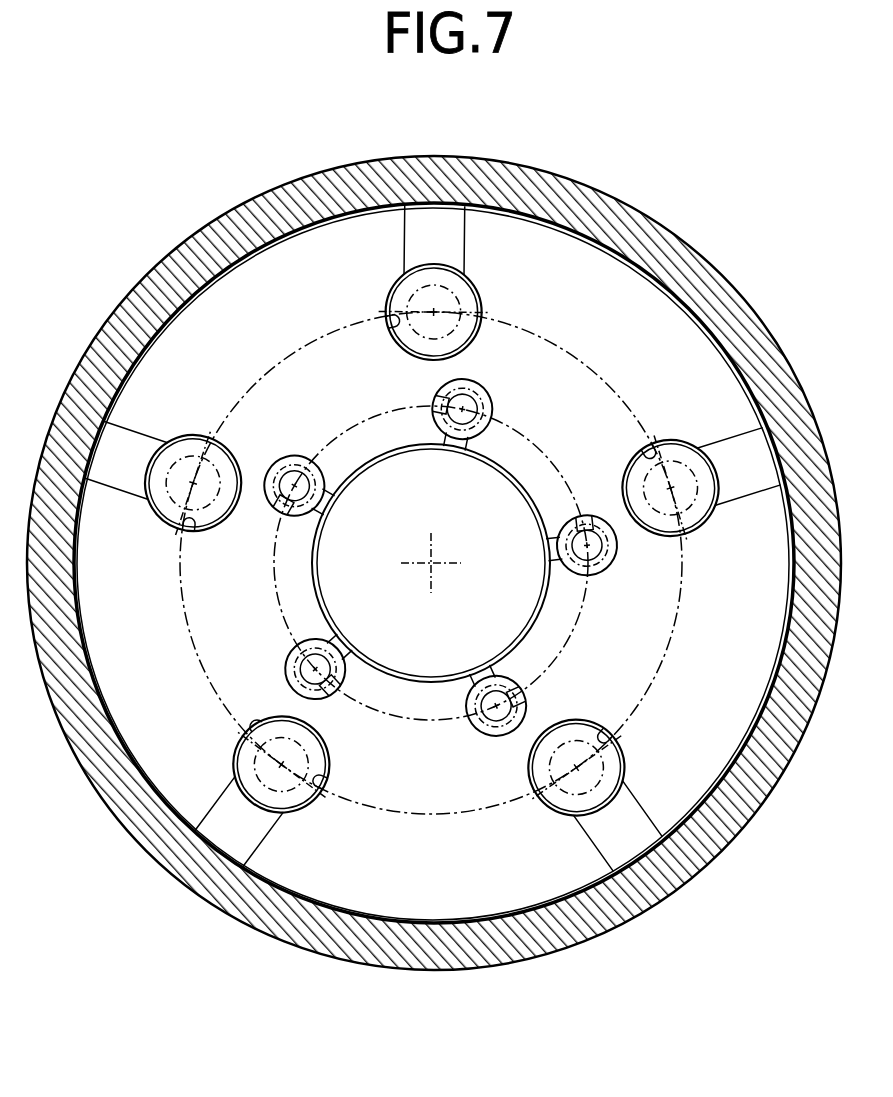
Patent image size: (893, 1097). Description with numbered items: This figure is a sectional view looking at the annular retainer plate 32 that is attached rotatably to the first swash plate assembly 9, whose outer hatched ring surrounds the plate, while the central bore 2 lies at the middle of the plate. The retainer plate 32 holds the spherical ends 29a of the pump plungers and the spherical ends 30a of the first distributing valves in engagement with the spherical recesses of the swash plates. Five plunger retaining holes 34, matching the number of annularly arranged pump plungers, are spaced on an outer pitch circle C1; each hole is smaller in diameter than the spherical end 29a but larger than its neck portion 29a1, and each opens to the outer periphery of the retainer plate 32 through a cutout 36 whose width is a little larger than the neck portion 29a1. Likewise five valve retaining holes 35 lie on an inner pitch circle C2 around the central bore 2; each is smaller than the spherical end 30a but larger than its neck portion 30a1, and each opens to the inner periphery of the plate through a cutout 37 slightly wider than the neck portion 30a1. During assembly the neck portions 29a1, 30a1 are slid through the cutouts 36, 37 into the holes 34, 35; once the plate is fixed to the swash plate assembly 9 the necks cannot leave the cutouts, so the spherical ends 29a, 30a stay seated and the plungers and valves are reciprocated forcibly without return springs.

The first swash plate assembly 9 is at (608, 192).
The annular retainer plate 32 is at (662, 310).
The central hub / shaft bore 2 is at (560, 643).
The spherical end 29a is at (448, 256).
The neck portion 29a1 is at (498, 313).
The plunger retaining hole 34 is at (396, 326).
The cutout 36 is at (401, 236).
The spherical end 30a is at (469, 442).
The neck portion 30a1 is at (445, 425).
The valve retaining hole 35 is at (435, 419).
The cutout 37 is at (447, 447).
The outer pitch circle C1 is at (603, 370).
The inner pitch circle C2 is at (541, 428).